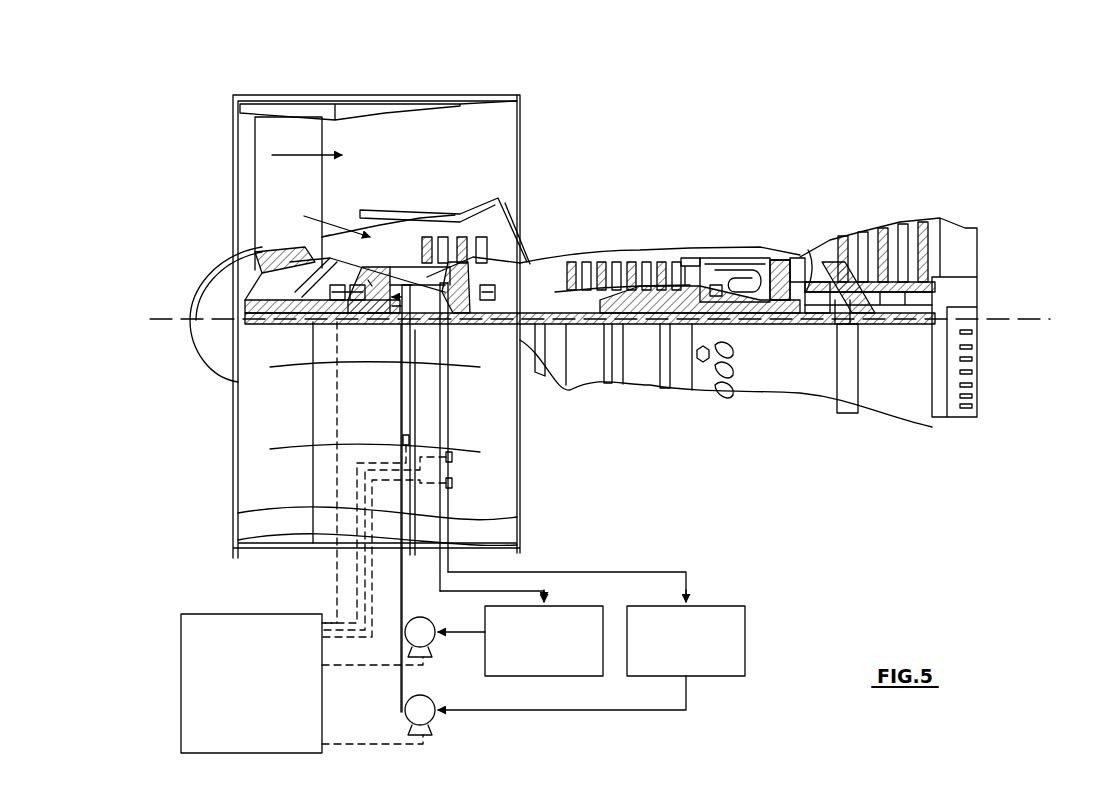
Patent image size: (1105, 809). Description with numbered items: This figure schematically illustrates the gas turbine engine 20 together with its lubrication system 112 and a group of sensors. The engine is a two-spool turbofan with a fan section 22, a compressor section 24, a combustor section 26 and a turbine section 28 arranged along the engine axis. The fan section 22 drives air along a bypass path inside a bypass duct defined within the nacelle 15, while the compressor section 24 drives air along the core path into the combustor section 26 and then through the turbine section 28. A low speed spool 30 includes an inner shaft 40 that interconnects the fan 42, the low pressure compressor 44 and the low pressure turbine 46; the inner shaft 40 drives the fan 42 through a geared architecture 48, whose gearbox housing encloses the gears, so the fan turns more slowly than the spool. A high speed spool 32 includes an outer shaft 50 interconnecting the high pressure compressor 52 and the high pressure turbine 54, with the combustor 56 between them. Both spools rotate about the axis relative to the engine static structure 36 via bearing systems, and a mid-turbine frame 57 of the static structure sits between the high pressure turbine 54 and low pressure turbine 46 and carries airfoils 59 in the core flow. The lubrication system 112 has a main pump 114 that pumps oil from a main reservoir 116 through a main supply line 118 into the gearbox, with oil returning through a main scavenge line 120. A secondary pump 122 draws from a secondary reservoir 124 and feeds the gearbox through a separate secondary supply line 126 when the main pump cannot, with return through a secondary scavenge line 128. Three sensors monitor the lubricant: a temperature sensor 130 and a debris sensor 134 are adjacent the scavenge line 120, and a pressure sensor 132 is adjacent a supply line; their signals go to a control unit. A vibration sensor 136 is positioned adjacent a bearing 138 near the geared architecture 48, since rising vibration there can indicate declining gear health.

The gas turbine engine 20 is at (742, 133).
The fan section 22 is at (326, 90).
The nacelle 15 is at (378, 101).
The fan 42 is at (302, 199).
The low pressure compressor 44 is at (470, 245).
The compressor section 24 is at (560, 247).
The high pressure compressor 52 is at (625, 285).
The high speed spool 32 is at (681, 266).
The combustor section 26 is at (737, 242).
The combustor 56 is at (742, 270).
The high pressure turbine 54 is at (790, 257).
The mid-turbine frame 57 is at (823, 245).
The turbine section 28 is at (850, 210).
The low pressure turbine 46 is at (885, 230).
The airfoils 59 is at (843, 292).
The outer shaft 50 is at (740, 316).
The geared architecture 48 is at (383, 322).
The vibration sensor 136 is at (336, 300).
The bearing 138 is at (322, 323).
The low speed spool 30 is at (644, 326).
The engine static structure 36 is at (675, 397).
The inner shaft 40 is at (540, 376).
The lubrication system 112 is at (797, 644).
The main pump 114 is at (428, 628).
The main reservoir 116 is at (555, 678).
The main supply line 118 is at (408, 385).
The main scavenge line 120 is at (434, 420).
The secondary pump 122 is at (440, 690).
The secondary reservoir 124 is at (735, 678).
The secondary supply line 126 is at (400, 695).
The secondary scavenge line 128 is at (590, 572).
The temperature sensor 130 is at (452, 460).
The pressure sensor 132 is at (403, 440).
The debris sensor 134 is at (452, 484).